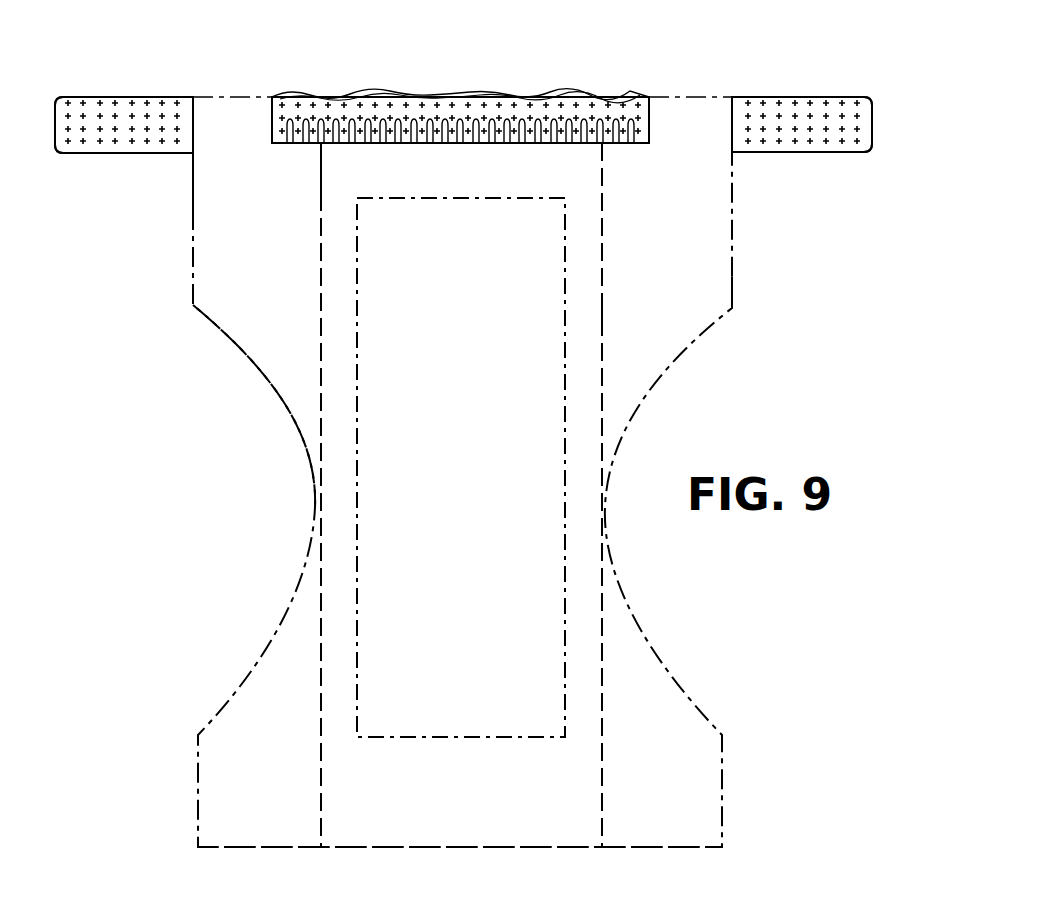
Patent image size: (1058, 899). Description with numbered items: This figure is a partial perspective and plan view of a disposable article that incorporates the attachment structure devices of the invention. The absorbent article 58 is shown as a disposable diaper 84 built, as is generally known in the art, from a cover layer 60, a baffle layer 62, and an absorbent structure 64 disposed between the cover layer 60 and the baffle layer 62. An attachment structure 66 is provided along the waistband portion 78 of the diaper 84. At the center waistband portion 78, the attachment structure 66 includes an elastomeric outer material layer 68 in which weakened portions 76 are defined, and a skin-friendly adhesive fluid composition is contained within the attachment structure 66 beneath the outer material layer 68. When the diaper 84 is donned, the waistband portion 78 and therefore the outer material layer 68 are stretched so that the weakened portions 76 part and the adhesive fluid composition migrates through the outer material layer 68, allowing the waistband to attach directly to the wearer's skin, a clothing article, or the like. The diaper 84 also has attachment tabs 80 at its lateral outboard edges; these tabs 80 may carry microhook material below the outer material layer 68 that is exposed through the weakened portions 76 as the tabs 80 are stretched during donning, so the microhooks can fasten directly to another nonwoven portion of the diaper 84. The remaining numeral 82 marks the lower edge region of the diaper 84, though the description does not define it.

The absorbent article 58 is at (257, 392).
The cover layer 60 is at (343, 243).
The baffle layer 62 is at (385, 490).
The absorbent structure 64 is at (566, 306).
The attachment structure 66 is at (164, 172).
The outer material layer 68 is at (92, 100).
The weakened portions 76 is at (145, 117).
The waistband portion 78 is at (650, 113).
The attachment tabs 80 is at (56, 138).
The bottom waist edge 82 is at (700, 898).
The disposable diaper 84 is at (732, 277).